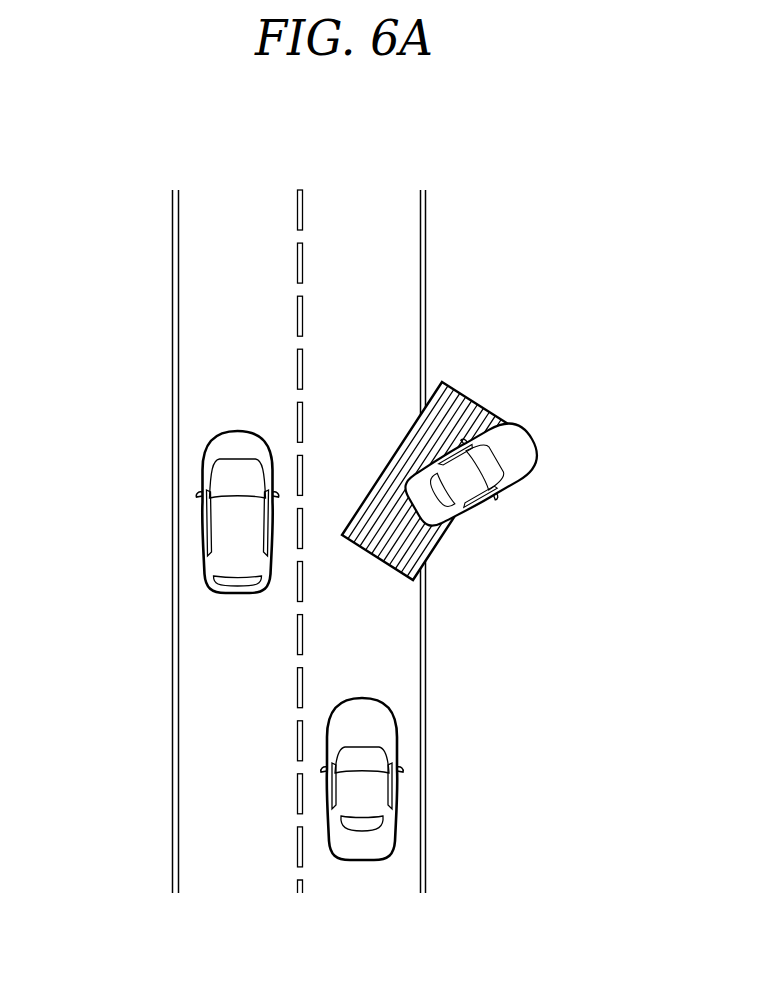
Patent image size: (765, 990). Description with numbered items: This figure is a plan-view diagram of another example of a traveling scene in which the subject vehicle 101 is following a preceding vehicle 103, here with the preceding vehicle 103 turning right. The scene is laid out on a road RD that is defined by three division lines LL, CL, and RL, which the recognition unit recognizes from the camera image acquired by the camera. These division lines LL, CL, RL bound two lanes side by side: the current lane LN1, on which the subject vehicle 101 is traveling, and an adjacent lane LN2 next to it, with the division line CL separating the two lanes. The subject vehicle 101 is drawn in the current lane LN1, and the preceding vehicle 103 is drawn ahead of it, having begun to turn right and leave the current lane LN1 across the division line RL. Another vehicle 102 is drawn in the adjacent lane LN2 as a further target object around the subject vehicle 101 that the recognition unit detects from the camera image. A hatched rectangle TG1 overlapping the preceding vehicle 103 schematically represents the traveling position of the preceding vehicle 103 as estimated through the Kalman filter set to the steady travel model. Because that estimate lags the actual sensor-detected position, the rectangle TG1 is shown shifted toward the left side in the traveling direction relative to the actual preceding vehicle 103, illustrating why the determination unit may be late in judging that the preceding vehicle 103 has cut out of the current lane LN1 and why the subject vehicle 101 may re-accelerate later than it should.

The road RD is at (227, 208).
The division line LL is at (173, 870).
The division line CL is at (295, 860).
The division line RL is at (427, 865).
The current lane LN1 is at (403, 228).
The adjacent lane LN2 is at (198, 290).
The rectangle TG1 is at (468, 400).
The subject vehicle 101 is at (393, 783).
The vehicle 102 is at (203, 522).
The preceding vehicle 103 is at (540, 453).